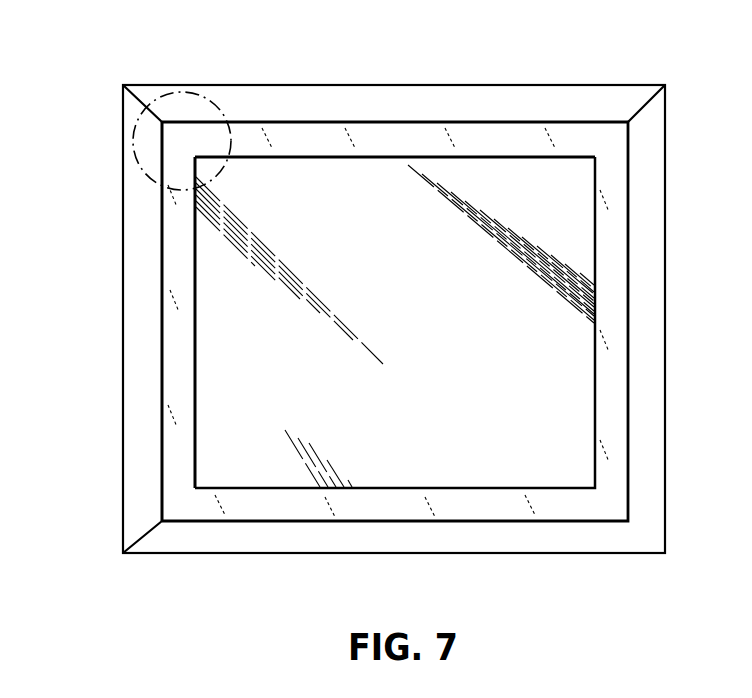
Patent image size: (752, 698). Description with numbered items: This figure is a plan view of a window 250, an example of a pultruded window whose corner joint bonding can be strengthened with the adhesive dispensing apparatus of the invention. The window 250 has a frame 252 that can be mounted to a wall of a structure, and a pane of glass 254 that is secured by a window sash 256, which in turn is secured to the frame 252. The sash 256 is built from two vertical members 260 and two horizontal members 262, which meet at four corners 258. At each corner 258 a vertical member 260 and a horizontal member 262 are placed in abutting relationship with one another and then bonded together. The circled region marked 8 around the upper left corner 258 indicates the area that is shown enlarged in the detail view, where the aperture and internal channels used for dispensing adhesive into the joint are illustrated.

The window 250 is at (347, 56).
The frame 252 is at (530, 85).
The pane of glass 254 is at (415, 316).
The window sash 256 is at (150, 241).
The corner 258 is at (167, 103).
The vertical member 260 is at (172, 330).
The horizontal member 262 is at (404, 128).
The detail view circle (FIG. 8) 8 is at (133, 133).